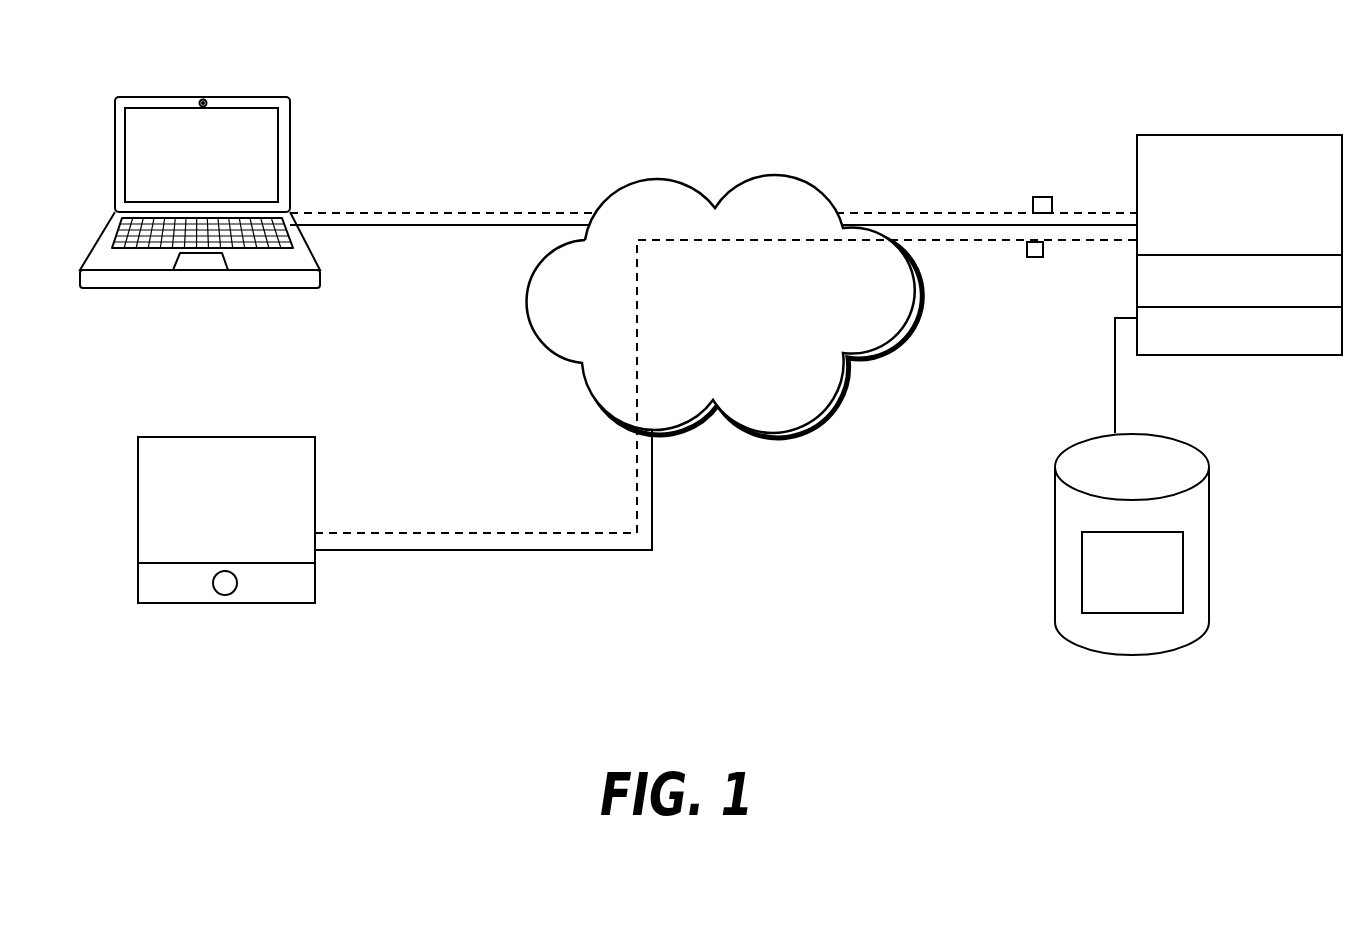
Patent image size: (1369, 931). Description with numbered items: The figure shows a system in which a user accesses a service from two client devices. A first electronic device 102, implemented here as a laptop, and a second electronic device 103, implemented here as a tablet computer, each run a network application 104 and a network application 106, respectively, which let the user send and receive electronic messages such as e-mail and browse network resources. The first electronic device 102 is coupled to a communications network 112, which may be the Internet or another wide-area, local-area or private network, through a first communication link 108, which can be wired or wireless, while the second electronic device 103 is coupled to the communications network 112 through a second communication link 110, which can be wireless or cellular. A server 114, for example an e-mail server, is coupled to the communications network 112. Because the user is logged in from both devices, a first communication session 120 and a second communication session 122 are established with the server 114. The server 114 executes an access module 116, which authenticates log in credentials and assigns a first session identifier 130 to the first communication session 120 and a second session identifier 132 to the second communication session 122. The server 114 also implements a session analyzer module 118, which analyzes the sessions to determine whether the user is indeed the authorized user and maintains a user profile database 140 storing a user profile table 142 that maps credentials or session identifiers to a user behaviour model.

The first electronic device 102 is at (228, 167).
The second electronic device 103 is at (229, 520).
The network application 104 is at (290, 144).
The network application 106 is at (315, 476).
The first communication link 108 is at (382, 226).
The second communication link 110 is at (530, 551).
The communications network 112 is at (730, 337).
The server 114 is at (1260, 205).
The access module 116 is at (1260, 292).
The session analyzer module 118 is at (1260, 342).
The first communication session 120 is at (435, 212).
The second communication session 122 is at (470, 532).
The first session identifier 130 is at (1040, 197).
The second session identifier 132 is at (1035, 257).
The user profile database 140 is at (1163, 544).
The user profile table 142 is at (1183, 562).